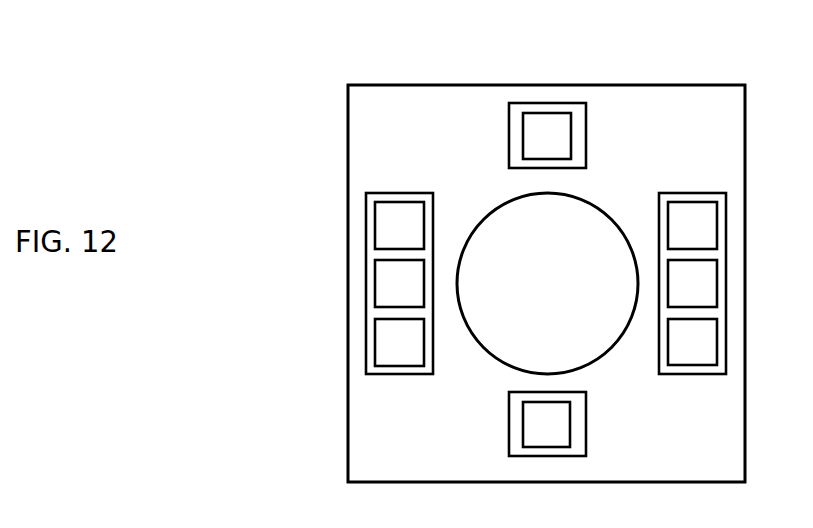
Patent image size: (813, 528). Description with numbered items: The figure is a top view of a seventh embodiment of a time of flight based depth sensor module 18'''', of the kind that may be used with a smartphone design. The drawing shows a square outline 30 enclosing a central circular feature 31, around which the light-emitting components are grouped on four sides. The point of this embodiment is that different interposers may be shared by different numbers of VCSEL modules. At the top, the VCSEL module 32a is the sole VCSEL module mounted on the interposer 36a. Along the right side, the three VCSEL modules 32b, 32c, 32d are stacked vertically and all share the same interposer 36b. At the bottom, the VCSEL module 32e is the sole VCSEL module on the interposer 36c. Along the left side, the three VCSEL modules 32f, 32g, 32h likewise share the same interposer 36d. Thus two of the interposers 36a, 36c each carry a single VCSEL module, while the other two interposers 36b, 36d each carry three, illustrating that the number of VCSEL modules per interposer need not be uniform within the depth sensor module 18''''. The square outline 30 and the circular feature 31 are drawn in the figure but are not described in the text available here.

The depth sensor module 18'''' is at (487, 258).
The substrate 30 is at (348, 162).
The central aperture 31 is at (486, 212).
The VCSEL module 32a is at (542, 113).
The VCSEL module 32b is at (719, 222).
The VCSEL module 32c is at (717, 280).
The VCSEL module 32d is at (717, 337).
The VCSEL module 32e is at (537, 447).
The VCSEL module 32f is at (375, 337).
The VCSEL module 32g is at (375, 278).
The VCSEL module 32h is at (375, 225).
The interposer 36a is at (577, 103).
The interposer 36b is at (726, 348).
The interposer 36c is at (518, 456).
The interposer 36d is at (366, 350).